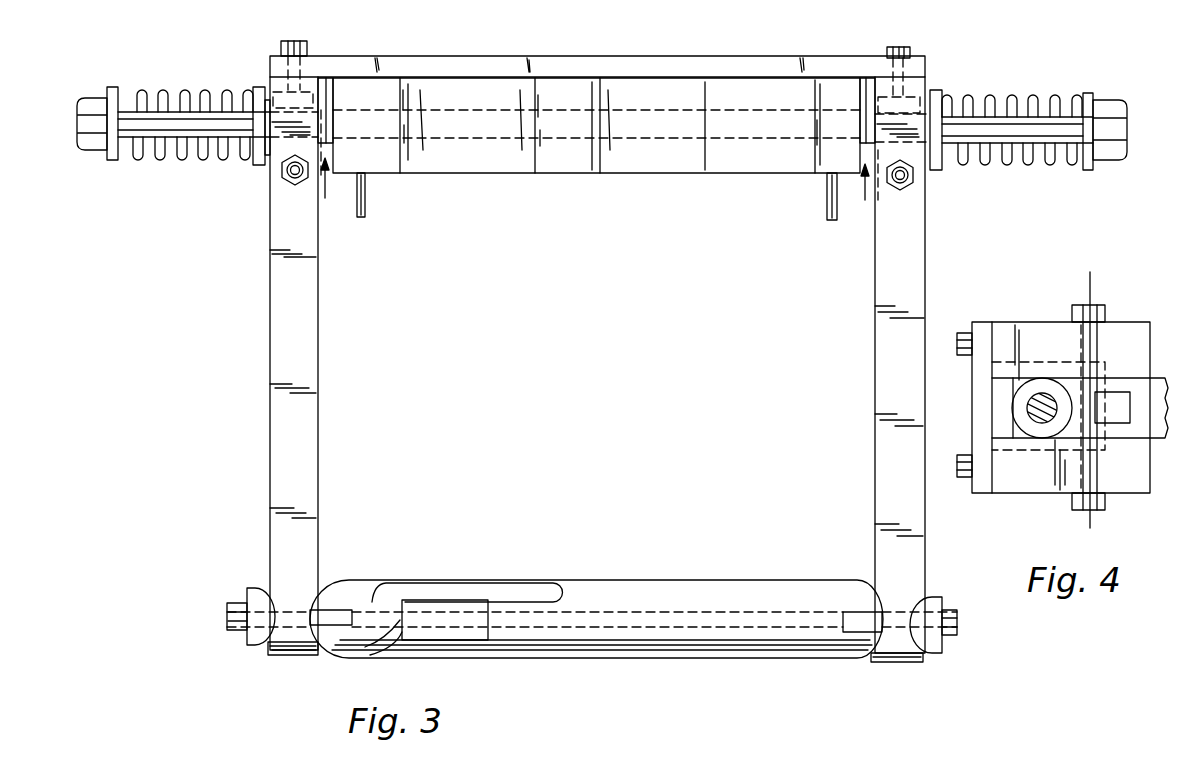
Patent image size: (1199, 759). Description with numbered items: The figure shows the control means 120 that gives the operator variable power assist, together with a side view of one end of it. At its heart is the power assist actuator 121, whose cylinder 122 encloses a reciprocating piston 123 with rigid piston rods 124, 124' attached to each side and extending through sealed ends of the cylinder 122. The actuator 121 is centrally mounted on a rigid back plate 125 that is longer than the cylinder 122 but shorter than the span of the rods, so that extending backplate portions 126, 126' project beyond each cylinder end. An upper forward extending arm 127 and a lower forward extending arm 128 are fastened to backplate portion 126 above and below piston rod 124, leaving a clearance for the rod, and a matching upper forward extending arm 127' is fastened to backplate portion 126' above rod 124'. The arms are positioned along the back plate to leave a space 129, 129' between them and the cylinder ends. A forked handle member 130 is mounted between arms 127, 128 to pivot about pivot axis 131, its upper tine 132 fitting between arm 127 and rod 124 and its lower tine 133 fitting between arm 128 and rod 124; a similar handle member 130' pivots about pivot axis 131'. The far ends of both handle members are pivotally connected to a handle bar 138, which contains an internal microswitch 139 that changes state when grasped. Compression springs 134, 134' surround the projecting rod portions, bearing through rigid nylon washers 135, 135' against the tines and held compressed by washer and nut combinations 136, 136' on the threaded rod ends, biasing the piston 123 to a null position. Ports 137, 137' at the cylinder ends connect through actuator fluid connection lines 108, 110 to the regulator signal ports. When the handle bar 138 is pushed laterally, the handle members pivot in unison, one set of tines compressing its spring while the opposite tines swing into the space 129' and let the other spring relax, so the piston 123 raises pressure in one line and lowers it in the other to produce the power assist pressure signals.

In FIG. 3, the actuator fluid connection line 108 is at (363, 214).
In FIG. 3, the actuator fluid connection line 110 is at (833, 213).
In FIG. 3, the control means 120 is at (503, 53).
In FIG. 3, the power assist actuator 121 is at (469, 173).
In FIG. 3, the cylinder 122 is at (521, 176).
In FIG. 3, the reciprocating piston 123 is at (601, 176).
In FIG. 3, the piston rod 124 is at (596, 99).
In FIG. 4, the piston rod 124 is at (1030, 461).
In FIG. 3, the piston rod 124' is at (740, 97).
In FIG. 3, the back plate 125 is at (358, 57).
In FIG. 4, the back plate 125 is at (982, 335).
In FIG. 3, the extending backplate portion 126 is at (262, 57).
In FIG. 3, the extending backplate portion 126' is at (942, 62).
In FIG. 3, the upper forward extending arm 127 is at (241, 80).
In FIG. 4, the upper forward extending arm 127 is at (1031, 377).
In FIG. 3, the forward extending arm 127' is at (939, 99).
In FIG. 4, the lower forward extending arm 128 is at (1002, 493).
In FIG. 3, the space 129 is at (355, 206).
In FIG. 3, the space 129' is at (840, 202).
In FIG. 3, the handle member 130 is at (263, 366).
In FIG. 4, the handle member 130 is at (1080, 460).
In FIG. 3, the handle member 130' is at (861, 369).
In FIG. 3, the pivot axis 131 is at (250, 205).
In FIG. 4, the pivot axis 131 is at (1114, 396).
In FIG. 3, the pivot axis 131' is at (941, 207).
In FIG. 4, the upper tine 132 is at (1010, 380).
In FIG. 4, the lower tine 133 is at (1010, 435).
In FIG. 3, the compression spring 134 is at (212, 148).
In FIG. 3, the compression spring 134' is at (984, 115).
In FIG. 3, the washer 135 is at (234, 148).
In FIG. 4, the washer 135 is at (1001, 408).
In FIG. 3, the washer 135' is at (961, 153).
In FIG. 3, the washer and nut combination 136 is at (77, 153).
In FIG. 3, the washer and nut combination 136' is at (1135, 110).
In FIG. 3, the port 137 is at (398, 217).
In FIG. 3, the port 137' is at (765, 216).
In FIG. 3, the handle bar 138 is at (680, 580).
In FIG. 3, the microswitch 139 is at (490, 632).